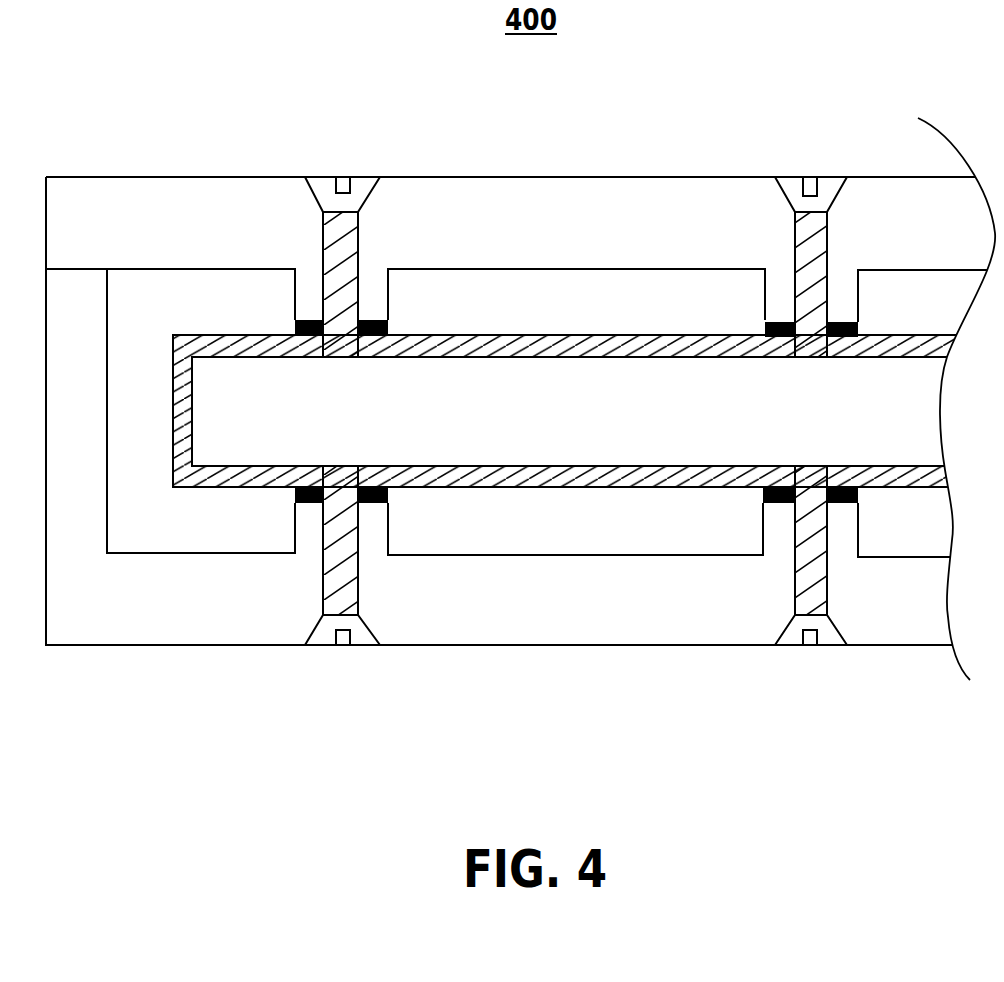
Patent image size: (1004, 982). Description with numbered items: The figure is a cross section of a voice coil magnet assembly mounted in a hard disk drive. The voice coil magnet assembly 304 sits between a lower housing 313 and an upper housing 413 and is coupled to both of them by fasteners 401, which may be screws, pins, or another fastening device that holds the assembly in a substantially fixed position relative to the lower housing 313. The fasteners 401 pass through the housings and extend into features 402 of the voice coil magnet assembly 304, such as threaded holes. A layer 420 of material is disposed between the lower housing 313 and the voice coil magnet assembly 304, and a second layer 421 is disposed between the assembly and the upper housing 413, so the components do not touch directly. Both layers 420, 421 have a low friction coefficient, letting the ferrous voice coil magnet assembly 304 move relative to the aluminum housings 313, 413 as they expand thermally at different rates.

The fasteners 401 is at (355, 178).
The features 402 is at (358, 358).
The upper housing 413 is at (168, 218).
The lower housing 313 is at (168, 603).
The voice coil magnet assembly 304 is at (872, 467).
The layer 420 is at (388, 494).
The second layer 421 is at (388, 325).